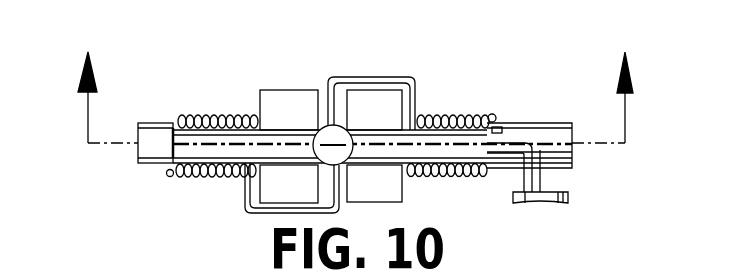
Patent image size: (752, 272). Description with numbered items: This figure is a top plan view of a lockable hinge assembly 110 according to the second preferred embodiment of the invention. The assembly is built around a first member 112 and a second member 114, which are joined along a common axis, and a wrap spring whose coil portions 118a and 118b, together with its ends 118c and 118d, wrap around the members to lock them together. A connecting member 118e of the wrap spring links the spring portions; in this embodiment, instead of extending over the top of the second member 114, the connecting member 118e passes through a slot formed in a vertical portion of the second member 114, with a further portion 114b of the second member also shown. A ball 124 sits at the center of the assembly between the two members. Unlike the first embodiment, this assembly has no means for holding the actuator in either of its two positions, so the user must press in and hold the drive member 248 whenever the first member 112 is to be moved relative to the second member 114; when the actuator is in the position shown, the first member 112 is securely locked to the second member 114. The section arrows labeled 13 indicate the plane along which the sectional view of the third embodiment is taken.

The section line 13- 13 is at (352, 97).
The lockable hinge assembly 110 is at (531, 48).
The first member 112 is at (558, 128).
The second member 114 is at (287, 102).
The portion of second member 114b is at (190, 114).
The wrap spring portion 118a is at (202, 178).
The wrap spring portion 118b is at (448, 178).
The wrap spring end 118c is at (170, 177).
The wrap spring end 118d is at (493, 115).
The connecting member 118e is at (336, 207).
The ball 124 is at (330, 137).
The drive member 248 is at (568, 197).